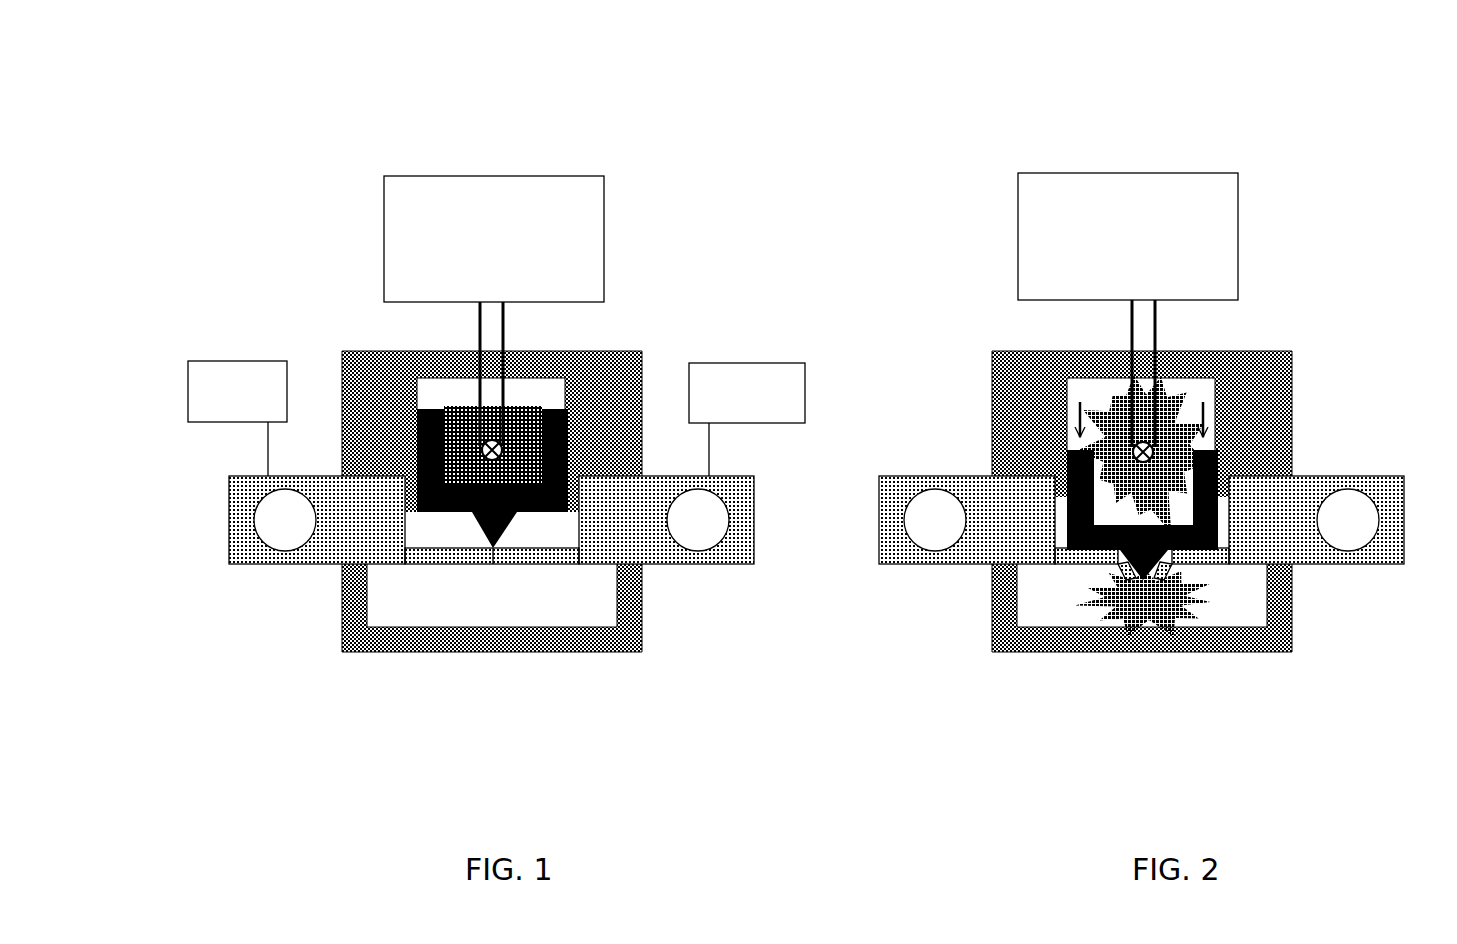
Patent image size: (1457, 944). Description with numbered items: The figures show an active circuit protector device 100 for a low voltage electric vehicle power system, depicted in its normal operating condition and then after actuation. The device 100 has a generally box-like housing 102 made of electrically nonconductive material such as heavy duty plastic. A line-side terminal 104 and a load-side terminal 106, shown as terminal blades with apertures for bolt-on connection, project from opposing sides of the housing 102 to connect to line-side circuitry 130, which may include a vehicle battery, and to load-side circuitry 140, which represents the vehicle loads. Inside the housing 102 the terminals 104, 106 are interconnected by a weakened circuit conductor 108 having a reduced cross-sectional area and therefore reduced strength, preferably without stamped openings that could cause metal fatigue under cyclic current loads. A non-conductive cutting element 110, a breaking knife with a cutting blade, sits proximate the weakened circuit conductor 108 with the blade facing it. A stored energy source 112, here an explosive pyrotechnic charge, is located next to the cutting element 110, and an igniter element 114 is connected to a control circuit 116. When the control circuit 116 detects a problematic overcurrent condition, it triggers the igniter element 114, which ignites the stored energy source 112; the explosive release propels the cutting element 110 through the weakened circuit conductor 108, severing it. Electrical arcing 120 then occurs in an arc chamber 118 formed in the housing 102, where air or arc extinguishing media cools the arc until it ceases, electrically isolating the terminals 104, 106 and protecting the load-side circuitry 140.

In FIG. 1, the active circuit protector device 100 is at (320, 110).
In FIG. 2, the active circuit protector device 100 is at (998, 128).
In FIG. 1, the housing 102 is at (342, 351).
In FIG. 1, the line-side terminal 104 is at (253, 552).
In FIG. 2, the line-side terminal 104 is at (905, 560).
In FIG. 1, the load-side terminal 106 is at (715, 558).
In FIG. 2, the load-side terminal 106 is at (1365, 558).
In FIG. 1, the weakened circuit conductor 108 is at (448, 565).
In FIG. 2, the weakened circuit conductor 108 is at (1082, 565).
In FIG. 1, the cutting element 110 is at (518, 520).
In FIG. 2, the cutting element 110 is at (1175, 548).
In FIG. 1, the stored energy source 112 is at (447, 407).
In FIG. 1, the igniter element 114 is at (508, 447).
In FIG. 2, the igniter element 114 is at (1178, 173).
In FIG. 1, the control circuit 116 is at (548, 176).
In FIG. 1, the arc chamber 118 is at (508, 600).
In FIG. 2, the electrical arcing 120 is at (1147, 612).
In FIG. 1, the line-side circuitry 130 is at (200, 360).
In FIG. 1, the load-side circuitry 140 is at (760, 362).